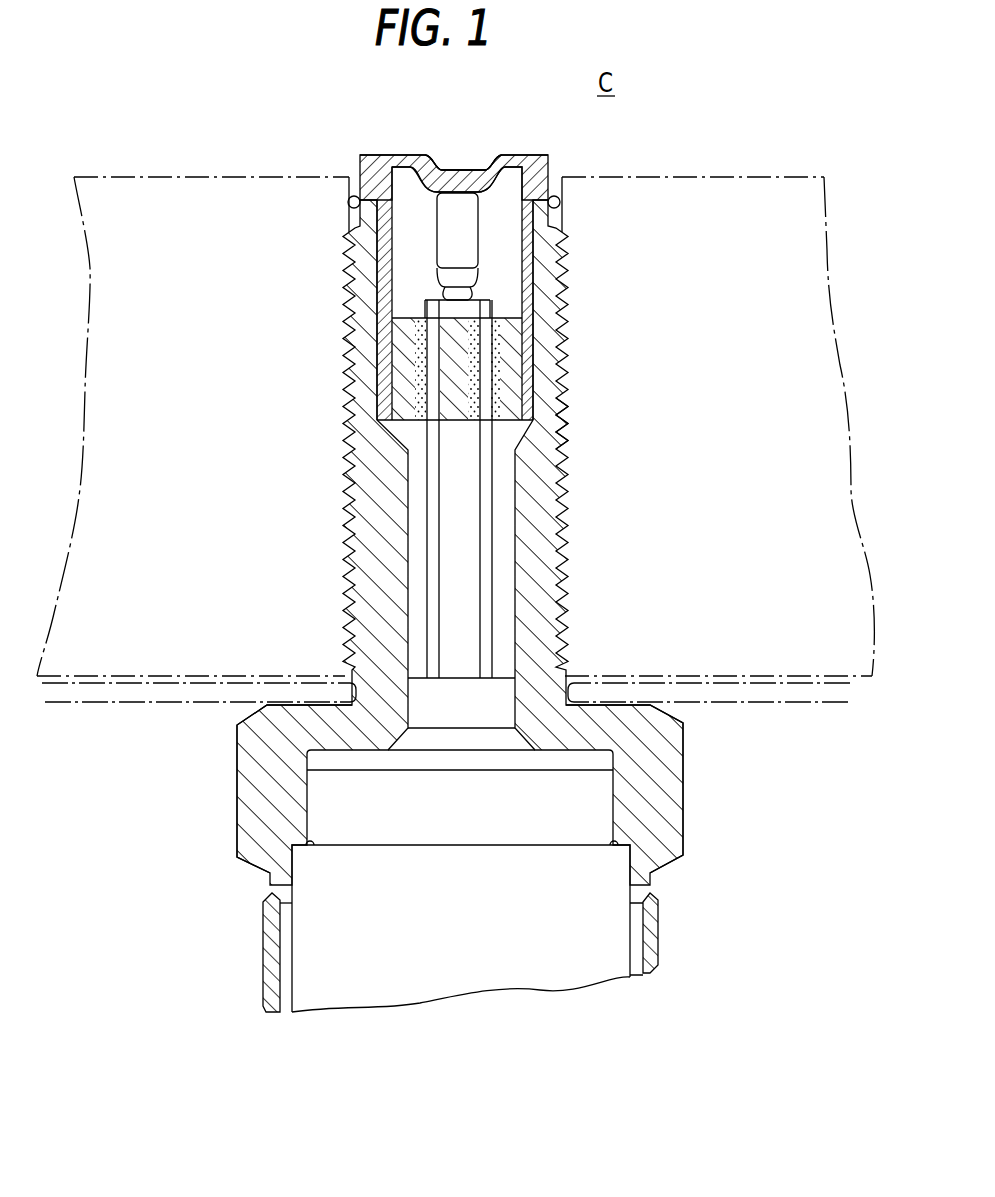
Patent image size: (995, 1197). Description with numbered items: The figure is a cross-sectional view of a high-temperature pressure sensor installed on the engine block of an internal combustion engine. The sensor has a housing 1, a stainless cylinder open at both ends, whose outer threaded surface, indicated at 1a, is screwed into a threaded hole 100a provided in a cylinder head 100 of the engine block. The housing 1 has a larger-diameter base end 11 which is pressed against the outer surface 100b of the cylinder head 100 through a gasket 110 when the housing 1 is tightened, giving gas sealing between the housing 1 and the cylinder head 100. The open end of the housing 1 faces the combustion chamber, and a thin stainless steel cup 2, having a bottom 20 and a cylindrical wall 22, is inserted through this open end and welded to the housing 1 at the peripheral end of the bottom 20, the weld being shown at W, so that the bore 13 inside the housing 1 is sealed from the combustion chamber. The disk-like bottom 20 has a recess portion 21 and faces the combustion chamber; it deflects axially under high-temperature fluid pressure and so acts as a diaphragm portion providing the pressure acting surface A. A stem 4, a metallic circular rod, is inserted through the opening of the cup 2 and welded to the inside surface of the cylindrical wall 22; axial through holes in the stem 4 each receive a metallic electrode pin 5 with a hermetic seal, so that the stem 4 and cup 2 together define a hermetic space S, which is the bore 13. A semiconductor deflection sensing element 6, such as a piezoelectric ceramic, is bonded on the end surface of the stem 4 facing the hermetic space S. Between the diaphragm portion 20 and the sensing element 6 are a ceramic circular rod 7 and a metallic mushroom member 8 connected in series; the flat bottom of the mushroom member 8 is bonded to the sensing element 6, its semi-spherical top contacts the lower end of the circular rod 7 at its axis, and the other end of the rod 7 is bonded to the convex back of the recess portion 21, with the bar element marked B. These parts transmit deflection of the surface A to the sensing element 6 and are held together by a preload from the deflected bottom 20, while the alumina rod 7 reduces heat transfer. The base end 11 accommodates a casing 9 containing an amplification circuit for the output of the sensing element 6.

The housing 1 is at (352, 356).
The external thread 1a is at (572, 433).
The stainless steel cup 2 is at (352, 162).
The stem 4 is at (402, 400).
The metallic electrode pin 5 is at (483, 548).
The semiconductor deflection sensing element 6 is at (430, 300).
The ceramic circular rod 7 is at (445, 235).
The metallic mushroom member 8 is at (438, 277).
The casing 9 is at (307, 960).
The base end 11 is at (672, 780).
The bore 13 is at (512, 178).
The bottom 20 is at (400, 154).
The recess portion 21 is at (447, 168).
The cylindrical wall 22 is at (528, 303).
The pressure acting surface A is at (466, 170).
The bar element B is at (496, 242).
The hermetic space S is at (505, 287).
The weld W is at (350, 198).
The cylinder head 100 is at (744, 196).
The threaded hole 100a is at (562, 221).
The outer surface 100b is at (608, 675).
The gasket 110 is at (754, 692).